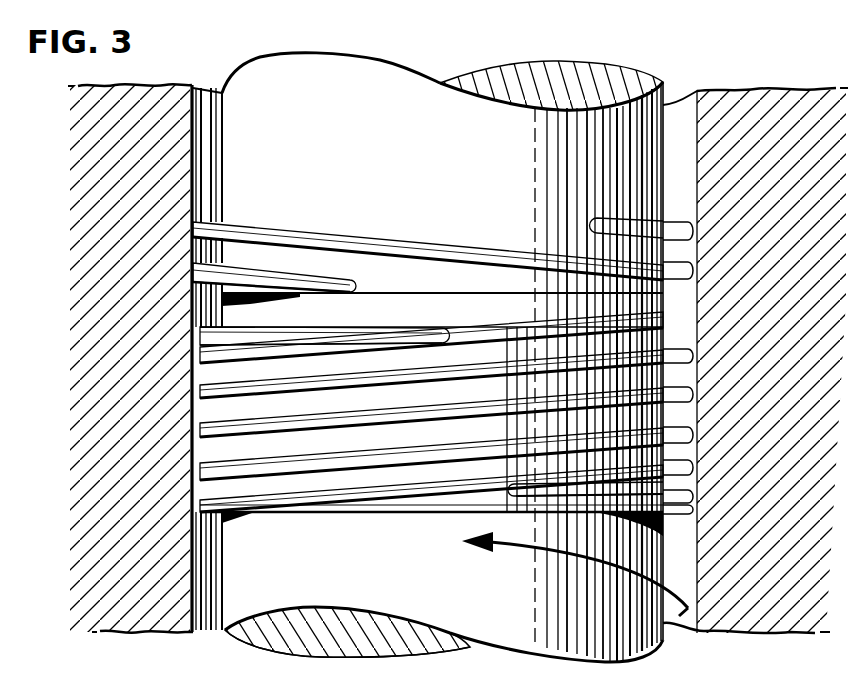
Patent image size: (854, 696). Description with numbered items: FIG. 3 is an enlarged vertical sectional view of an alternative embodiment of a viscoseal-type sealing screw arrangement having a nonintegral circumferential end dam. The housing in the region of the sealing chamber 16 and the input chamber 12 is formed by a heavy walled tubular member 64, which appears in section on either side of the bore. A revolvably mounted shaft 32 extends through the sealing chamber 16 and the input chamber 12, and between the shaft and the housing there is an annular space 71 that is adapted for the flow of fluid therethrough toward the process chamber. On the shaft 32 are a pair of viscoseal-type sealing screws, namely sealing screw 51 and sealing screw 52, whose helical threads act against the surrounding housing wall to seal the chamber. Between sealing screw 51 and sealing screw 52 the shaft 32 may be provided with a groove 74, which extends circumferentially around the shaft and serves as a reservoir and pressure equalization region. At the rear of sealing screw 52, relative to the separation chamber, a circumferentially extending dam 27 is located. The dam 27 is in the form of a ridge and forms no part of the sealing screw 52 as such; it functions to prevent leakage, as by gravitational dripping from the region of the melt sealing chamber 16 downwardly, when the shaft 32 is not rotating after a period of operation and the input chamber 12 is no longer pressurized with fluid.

The input chamber 12 is at (206, 104).
The annular space 71 is at (686, 126).
The sealing screw 51 is at (358, 243).
The groove 74 is at (243, 312).
The sealing chamber 16 is at (697, 321).
The sealing screw 52 is at (463, 458).
The dam 27 is at (370, 510).
The shaft 32 is at (455, 597).
The tubular member 64 is at (147, 603).